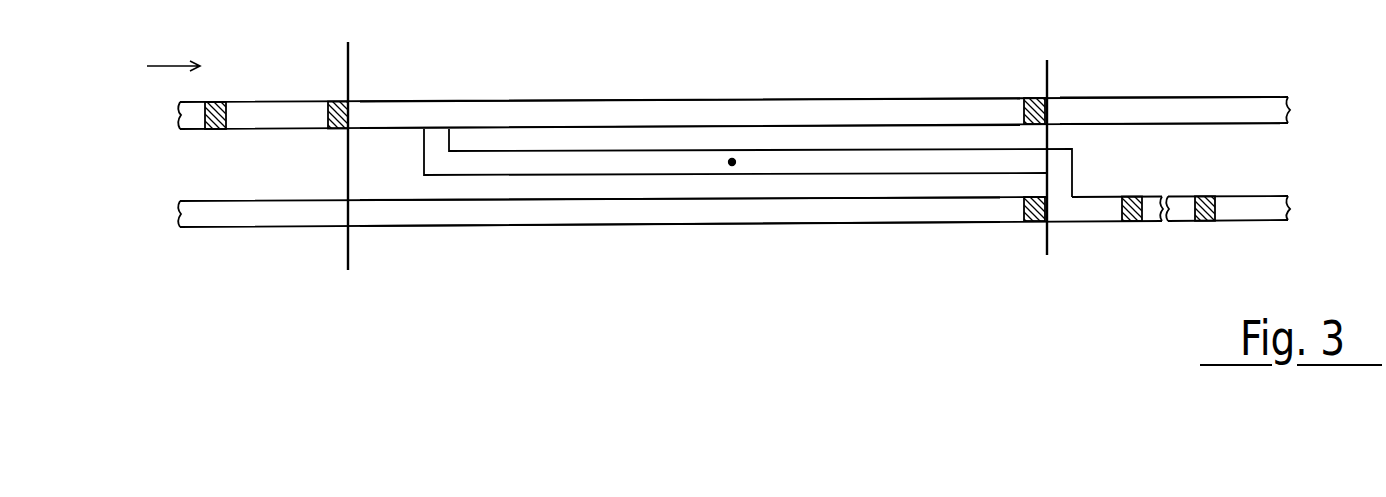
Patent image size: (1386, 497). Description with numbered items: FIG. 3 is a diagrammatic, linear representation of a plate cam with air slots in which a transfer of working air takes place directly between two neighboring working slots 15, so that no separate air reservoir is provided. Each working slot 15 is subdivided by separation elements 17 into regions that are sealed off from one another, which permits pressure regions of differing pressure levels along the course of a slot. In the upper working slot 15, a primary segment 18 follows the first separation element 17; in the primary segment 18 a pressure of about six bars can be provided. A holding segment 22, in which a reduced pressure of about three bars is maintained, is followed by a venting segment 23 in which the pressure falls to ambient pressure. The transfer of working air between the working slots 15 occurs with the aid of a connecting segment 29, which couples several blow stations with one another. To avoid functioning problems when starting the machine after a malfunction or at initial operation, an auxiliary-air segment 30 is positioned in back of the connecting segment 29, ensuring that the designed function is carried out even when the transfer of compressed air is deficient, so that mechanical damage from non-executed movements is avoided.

The working slot 15 is at (180, 114).
The separation element 17 is at (338, 110).
The primary segment 18 is at (261, 108).
The holding segment 22 is at (605, 106).
The venting segment 23 is at (1123, 108).
The connecting segment 29 is at (732, 162).
The auxiliary-air segment 30 is at (1150, 210).